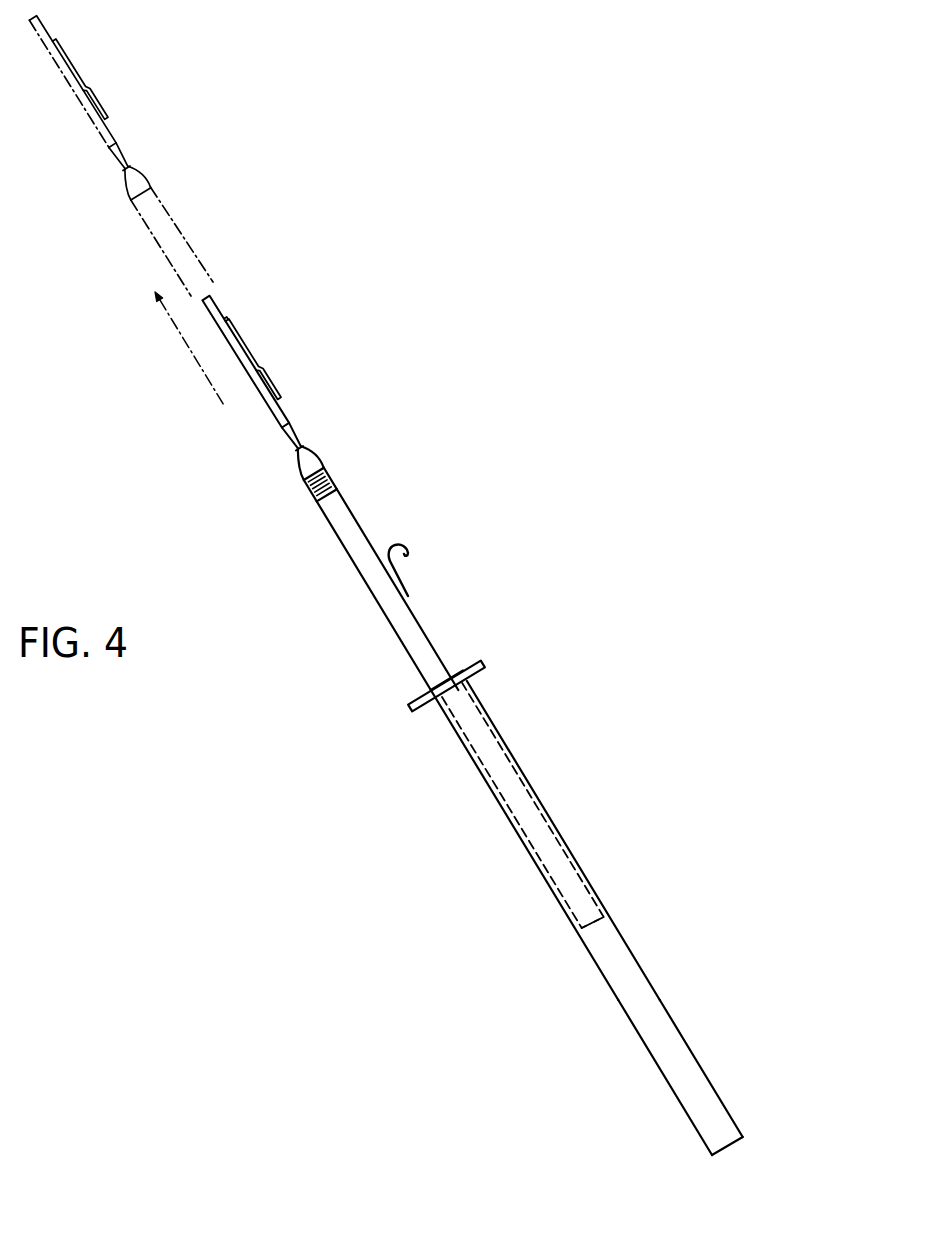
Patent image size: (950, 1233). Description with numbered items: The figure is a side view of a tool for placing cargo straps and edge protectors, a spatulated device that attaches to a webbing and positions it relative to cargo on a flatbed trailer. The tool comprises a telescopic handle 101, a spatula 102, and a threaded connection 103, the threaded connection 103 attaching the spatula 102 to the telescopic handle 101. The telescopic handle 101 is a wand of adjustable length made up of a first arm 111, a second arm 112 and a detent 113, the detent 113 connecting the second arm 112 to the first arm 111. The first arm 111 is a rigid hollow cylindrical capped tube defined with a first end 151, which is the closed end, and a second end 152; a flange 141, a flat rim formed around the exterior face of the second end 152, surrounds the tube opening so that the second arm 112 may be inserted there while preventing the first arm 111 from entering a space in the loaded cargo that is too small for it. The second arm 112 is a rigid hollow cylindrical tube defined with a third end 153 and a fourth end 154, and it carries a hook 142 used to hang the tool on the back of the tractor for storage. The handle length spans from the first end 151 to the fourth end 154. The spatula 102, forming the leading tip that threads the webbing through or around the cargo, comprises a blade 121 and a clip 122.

The telescopic handle 101 is at (593, 870).
The spatula 102 is at (216, 304).
The threaded connection 103 is at (326, 474).
The first arm 111 is at (695, 1052).
The second arm 112 is at (428, 645).
The detent 113 is at (575, 862).
The blade 121 is at (230, 353).
The clip 122 is at (267, 362).
The flange 141 is at (484, 665).
The hook 142 is at (409, 553).
The first end 151 is at (737, 1147).
The second end 152 is at (465, 682).
The third end 153 is at (588, 929).
The fourth end 154 is at (341, 492).